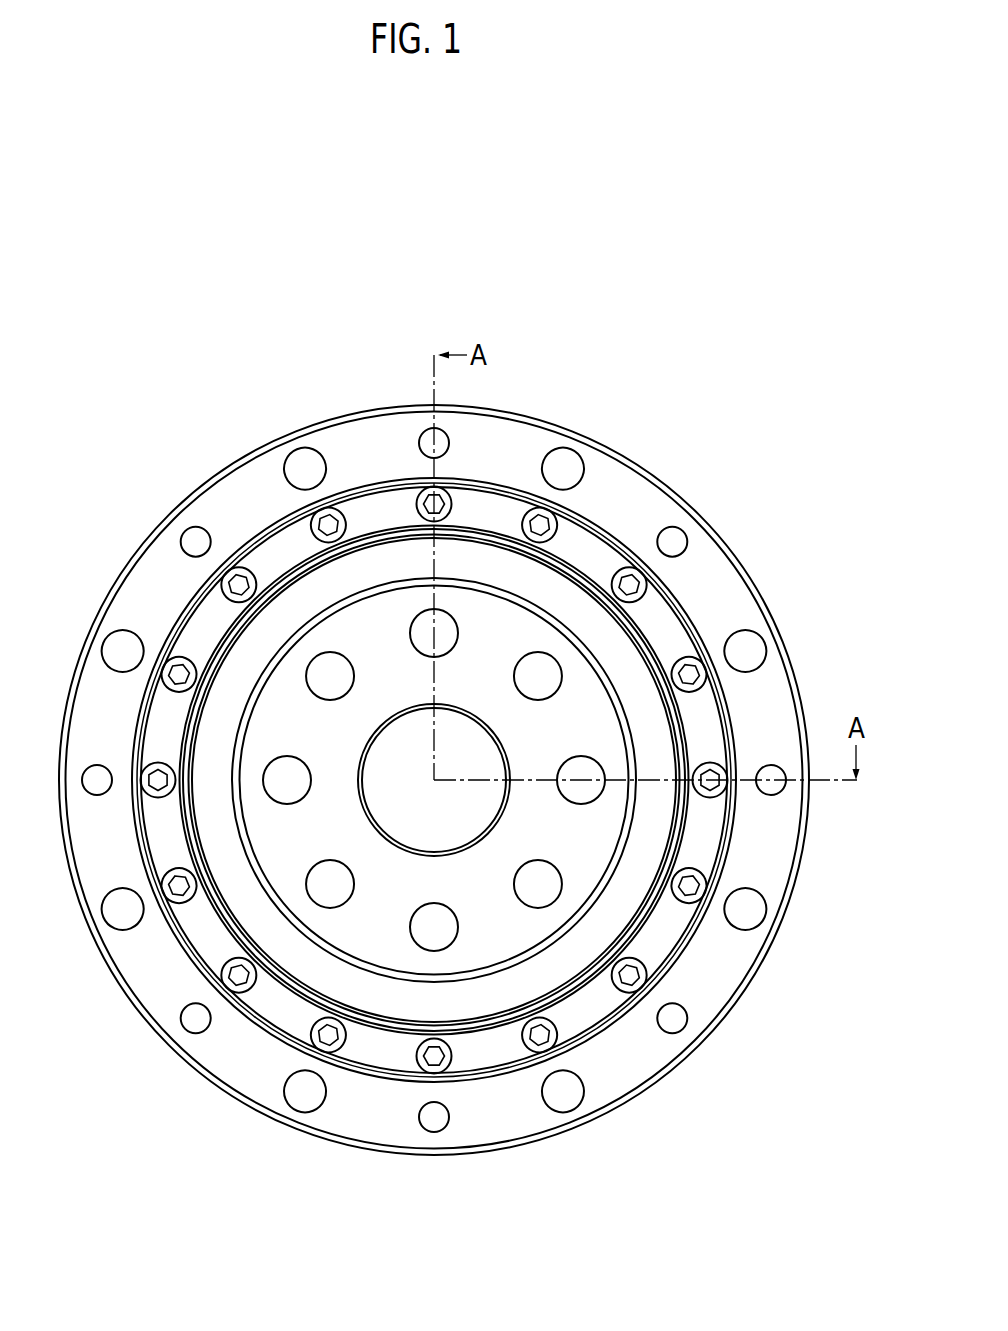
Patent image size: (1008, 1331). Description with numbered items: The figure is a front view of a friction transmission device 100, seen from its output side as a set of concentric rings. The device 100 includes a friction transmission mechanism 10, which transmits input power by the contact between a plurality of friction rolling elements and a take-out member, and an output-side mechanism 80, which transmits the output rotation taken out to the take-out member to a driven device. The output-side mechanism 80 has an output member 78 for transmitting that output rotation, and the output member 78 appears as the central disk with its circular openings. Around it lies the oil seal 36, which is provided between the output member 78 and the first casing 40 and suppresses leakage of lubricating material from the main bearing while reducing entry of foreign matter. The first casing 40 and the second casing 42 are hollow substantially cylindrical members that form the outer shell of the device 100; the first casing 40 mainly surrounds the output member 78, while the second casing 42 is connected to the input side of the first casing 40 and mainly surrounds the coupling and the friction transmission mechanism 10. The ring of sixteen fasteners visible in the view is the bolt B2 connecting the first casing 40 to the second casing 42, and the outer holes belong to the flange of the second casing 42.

The friction transmission mechanism 10 is at (381, 380).
The friction transmission device 100 is at (764, 362).
The second casing 42 is at (742, 615).
The first casing 40 is at (663, 618).
The bolt B2 is at (540, 523).
The oil seal 36 is at (582, 605).
The output-side mechanism 80 is at (390, 566).
The output member 78 is at (613, 797).